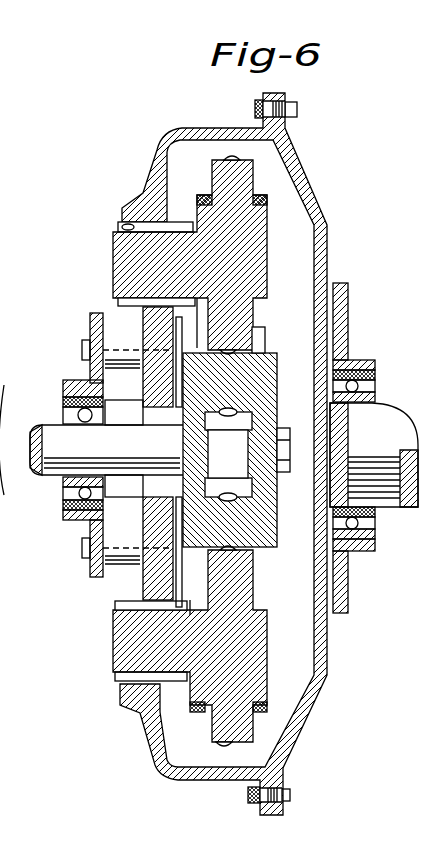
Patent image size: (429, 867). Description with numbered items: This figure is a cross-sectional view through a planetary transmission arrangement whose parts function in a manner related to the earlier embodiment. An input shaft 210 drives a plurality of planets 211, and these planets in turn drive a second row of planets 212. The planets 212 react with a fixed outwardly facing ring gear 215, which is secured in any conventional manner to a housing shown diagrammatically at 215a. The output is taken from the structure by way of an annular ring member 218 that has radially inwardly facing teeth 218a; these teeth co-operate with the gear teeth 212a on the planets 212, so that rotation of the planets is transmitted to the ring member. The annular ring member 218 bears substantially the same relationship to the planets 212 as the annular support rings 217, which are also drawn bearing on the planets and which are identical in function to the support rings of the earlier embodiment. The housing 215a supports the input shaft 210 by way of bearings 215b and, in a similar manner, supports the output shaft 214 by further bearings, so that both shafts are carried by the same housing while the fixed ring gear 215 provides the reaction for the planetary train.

The shaft 210 is at (146, 459).
The planets 211 is at (278, 372).
The planets 212 is at (135, 263).
The gear teeth 212a is at (120, 302).
The output shaft 214 is at (405, 397).
The fixed outwardly facing ring gear 215 is at (157, 577).
The housing 215a is at (92, 577).
The bearings 215b is at (63, 420).
The annular support rings 217 is at (210, 196).
The annular ring member 218 is at (153, 189).
The radially inwardly facing teeth 218a is at (122, 226).